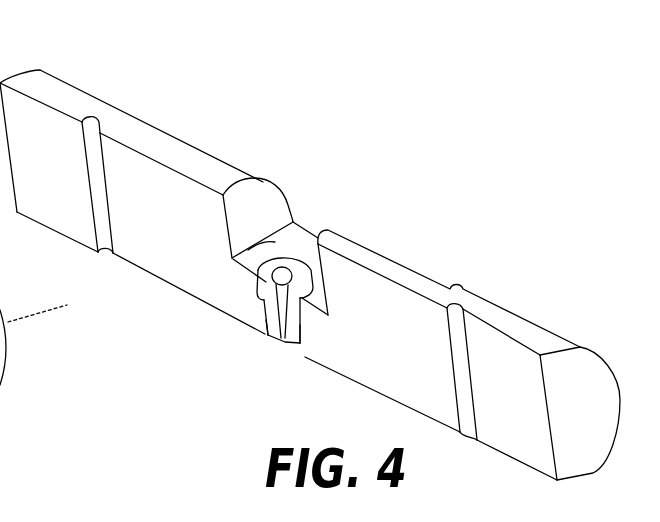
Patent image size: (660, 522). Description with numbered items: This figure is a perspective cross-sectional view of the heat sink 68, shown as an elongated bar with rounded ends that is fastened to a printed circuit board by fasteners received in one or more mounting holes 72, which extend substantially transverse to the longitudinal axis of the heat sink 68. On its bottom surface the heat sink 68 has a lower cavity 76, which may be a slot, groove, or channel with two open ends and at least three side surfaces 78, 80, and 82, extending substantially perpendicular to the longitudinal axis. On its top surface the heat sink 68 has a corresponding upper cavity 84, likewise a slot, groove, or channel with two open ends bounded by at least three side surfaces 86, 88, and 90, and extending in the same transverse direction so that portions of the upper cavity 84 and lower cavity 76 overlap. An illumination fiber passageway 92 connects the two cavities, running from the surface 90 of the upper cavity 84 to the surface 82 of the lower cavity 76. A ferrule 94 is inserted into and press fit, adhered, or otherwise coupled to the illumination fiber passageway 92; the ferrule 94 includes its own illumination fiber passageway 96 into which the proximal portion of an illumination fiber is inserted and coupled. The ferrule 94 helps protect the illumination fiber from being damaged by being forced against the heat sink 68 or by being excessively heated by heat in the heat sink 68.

The heat sink 68 is at (226, 155).
The mounting holes 72 is at (455, 285).
The lower cavity 76 is at (287, 347).
The side surface 78 is at (265, 334).
The side surface 80 is at (306, 347).
The side surface 82 is at (305, 345).
The upper cavity 84 is at (262, 208).
The side surface 86 is at (256, 194).
The side surface 88 is at (320, 240).
The side surface 90 is at (232, 259).
The illumination fiber passageway 92 is at (270, 302).
The ferrule 94 is at (288, 268).
The illumination fiber passageway 96 is at (280, 340).